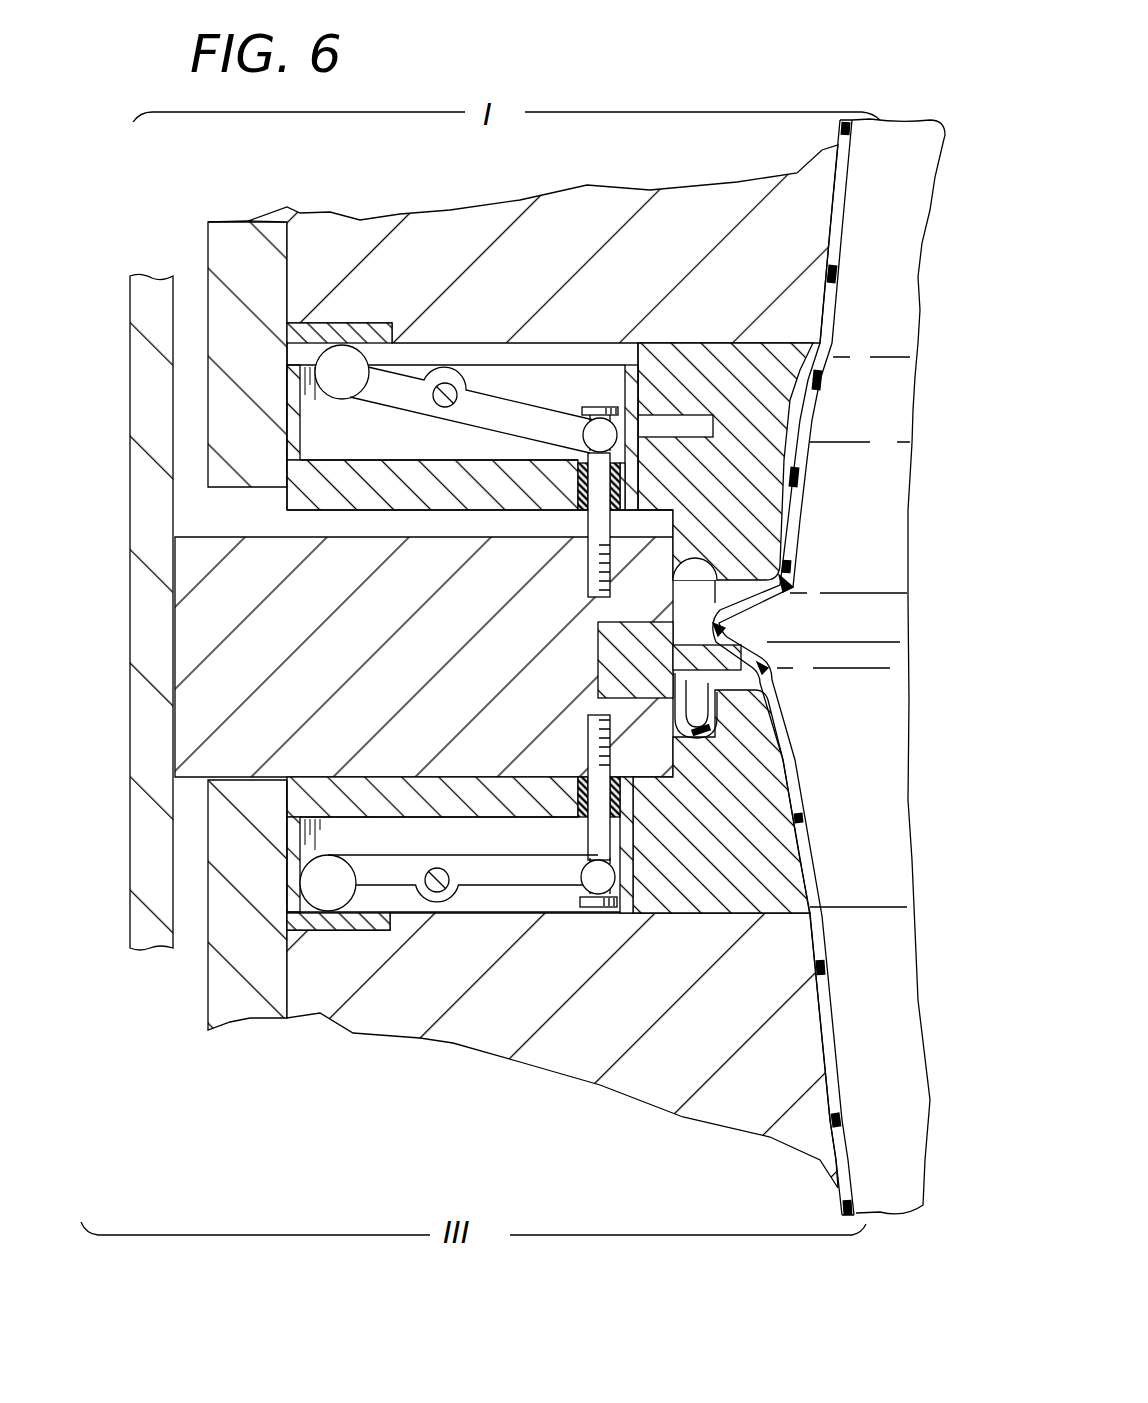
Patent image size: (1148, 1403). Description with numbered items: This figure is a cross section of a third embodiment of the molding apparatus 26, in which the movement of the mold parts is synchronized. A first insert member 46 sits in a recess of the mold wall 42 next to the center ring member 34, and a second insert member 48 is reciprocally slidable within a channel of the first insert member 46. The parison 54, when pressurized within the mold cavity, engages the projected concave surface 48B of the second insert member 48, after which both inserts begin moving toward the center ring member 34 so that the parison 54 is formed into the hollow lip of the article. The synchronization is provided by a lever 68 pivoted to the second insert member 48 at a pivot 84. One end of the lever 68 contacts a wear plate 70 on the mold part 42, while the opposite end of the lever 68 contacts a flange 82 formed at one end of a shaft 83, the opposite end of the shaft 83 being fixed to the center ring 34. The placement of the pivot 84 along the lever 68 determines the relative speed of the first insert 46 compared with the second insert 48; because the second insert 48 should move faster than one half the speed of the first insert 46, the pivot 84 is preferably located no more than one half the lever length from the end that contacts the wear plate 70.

The molding apparatus 26 is at (584, 104).
The center ring member 34 is at (362, 662).
The mold wall 42 is at (562, 257).
The first insert member 46 is at (765, 451).
The second insert member 48 is at (297, 497).
The concave surface 48B is at (693, 568).
The parison 54 is at (847, 205).
The lever 68 is at (368, 392).
The wear plate 70 is at (358, 323).
The flange 82 is at (592, 407).
The shaft 83 is at (597, 530).
The pivot 84 is at (448, 385).